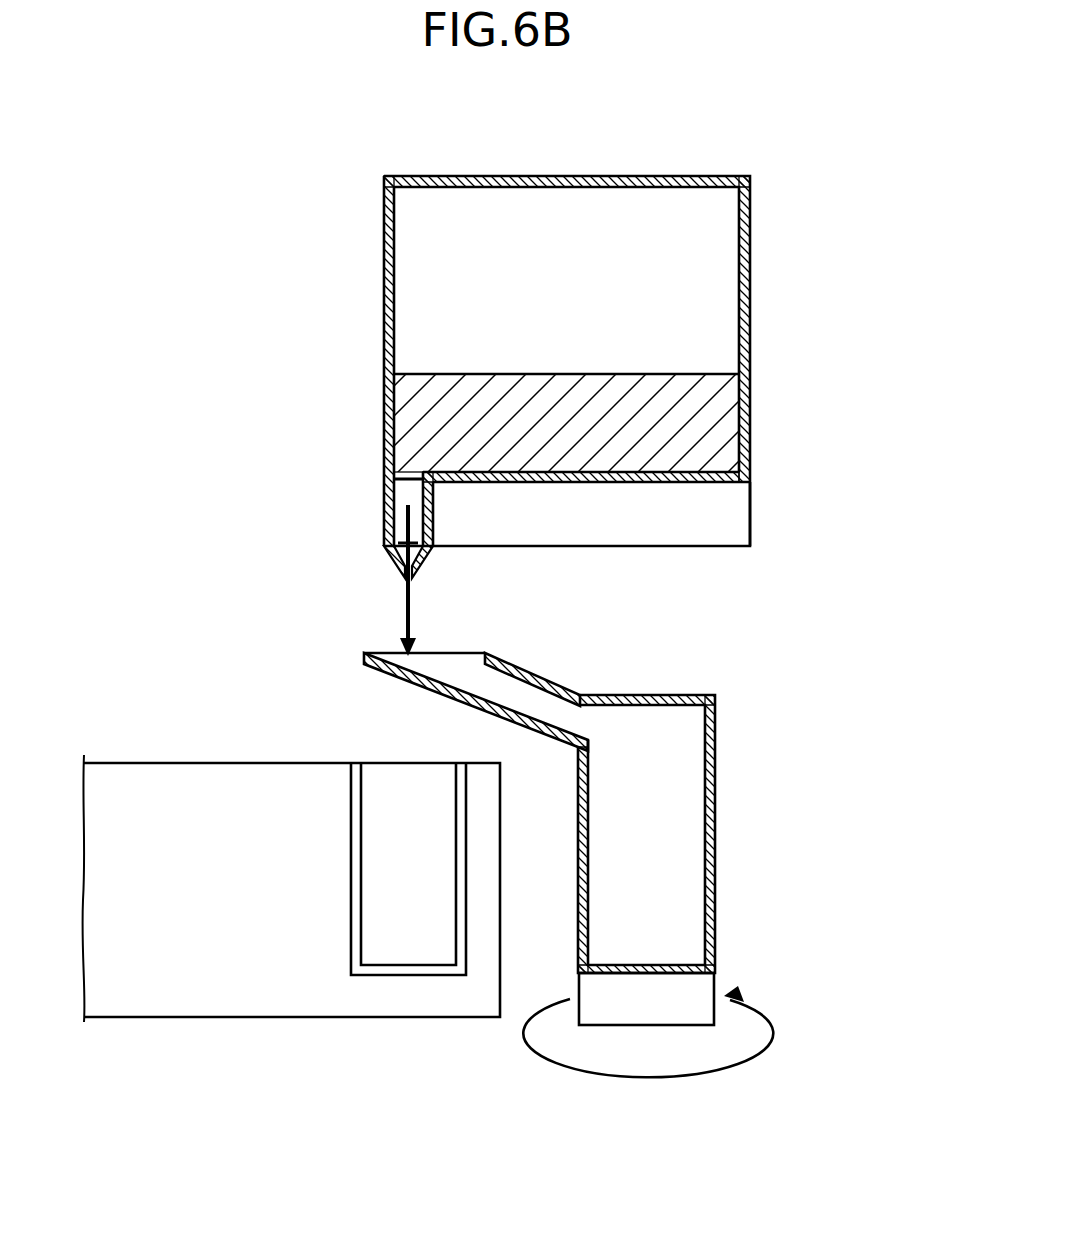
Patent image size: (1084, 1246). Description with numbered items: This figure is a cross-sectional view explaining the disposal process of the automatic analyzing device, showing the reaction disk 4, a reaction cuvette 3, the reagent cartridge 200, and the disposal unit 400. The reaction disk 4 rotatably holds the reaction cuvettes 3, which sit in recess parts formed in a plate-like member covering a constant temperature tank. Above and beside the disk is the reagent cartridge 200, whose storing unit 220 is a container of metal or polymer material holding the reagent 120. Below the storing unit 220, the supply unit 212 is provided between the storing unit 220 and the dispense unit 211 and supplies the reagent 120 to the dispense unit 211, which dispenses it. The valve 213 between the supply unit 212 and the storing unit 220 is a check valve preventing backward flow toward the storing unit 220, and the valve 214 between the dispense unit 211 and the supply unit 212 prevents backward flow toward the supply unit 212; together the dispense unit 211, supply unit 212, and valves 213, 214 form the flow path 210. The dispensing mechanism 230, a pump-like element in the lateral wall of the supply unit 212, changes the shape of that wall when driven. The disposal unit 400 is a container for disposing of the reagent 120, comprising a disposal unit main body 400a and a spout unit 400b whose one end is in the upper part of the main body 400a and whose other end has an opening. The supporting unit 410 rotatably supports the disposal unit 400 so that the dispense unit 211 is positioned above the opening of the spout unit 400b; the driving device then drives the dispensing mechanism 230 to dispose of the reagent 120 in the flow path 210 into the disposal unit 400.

The reagent cartridge 200 is at (382, 150).
The storing unit 220 is at (383, 289).
The reagent 120 is at (716, 423).
The dispensing mechanism 230 is at (752, 513).
The flow path 210 is at (272, 541).
The dispense unit 211 is at (392, 566).
The supply unit 212 is at (397, 546).
The valve 213 is at (408, 476).
The valve 214 is at (431, 564).
The disposal unit 400 is at (830, 846).
The disposal unit main body 400a is at (716, 850).
The spout unit 400b is at (540, 673).
The supporting unit 410 is at (646, 1000).
The reaction disk 4 is at (246, 763).
The reaction cuvette 3 is at (409, 975).